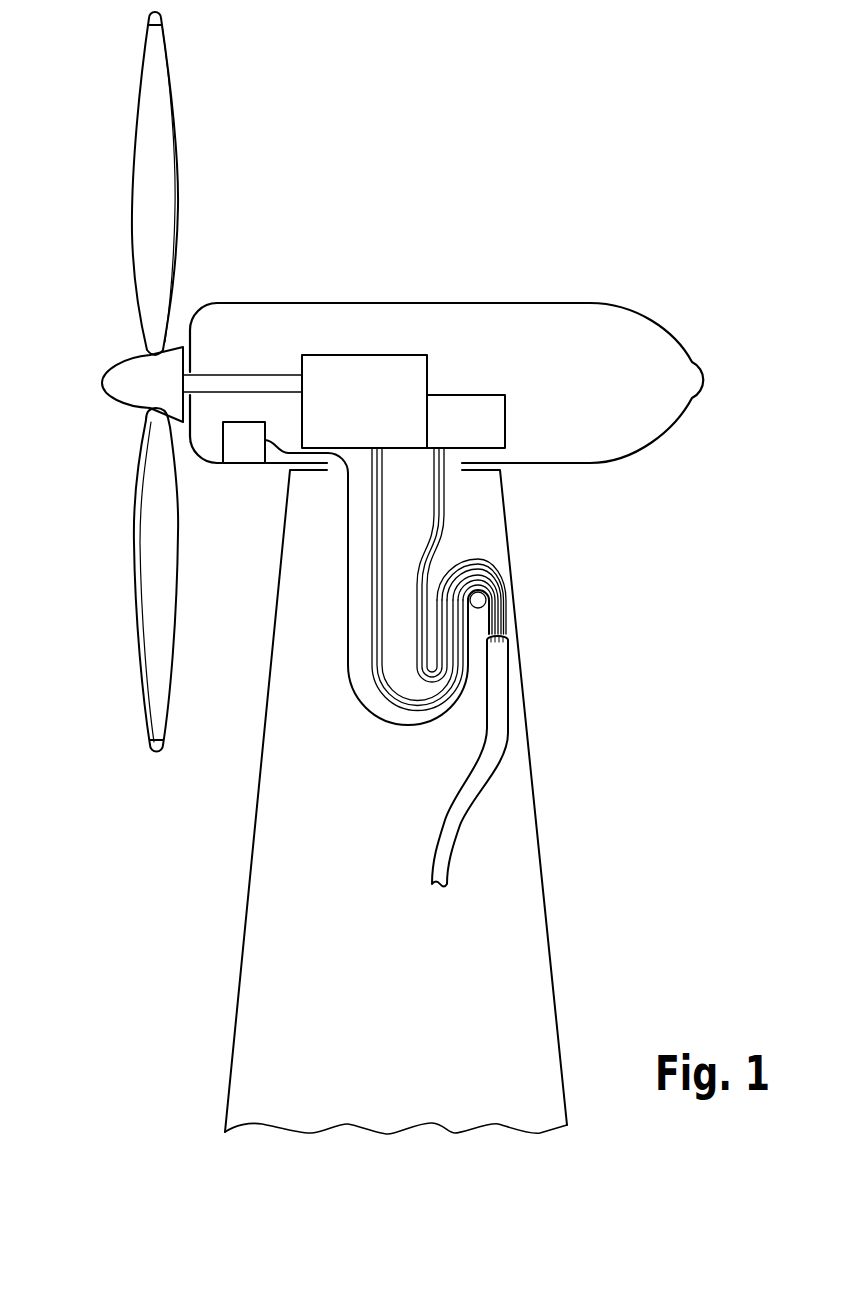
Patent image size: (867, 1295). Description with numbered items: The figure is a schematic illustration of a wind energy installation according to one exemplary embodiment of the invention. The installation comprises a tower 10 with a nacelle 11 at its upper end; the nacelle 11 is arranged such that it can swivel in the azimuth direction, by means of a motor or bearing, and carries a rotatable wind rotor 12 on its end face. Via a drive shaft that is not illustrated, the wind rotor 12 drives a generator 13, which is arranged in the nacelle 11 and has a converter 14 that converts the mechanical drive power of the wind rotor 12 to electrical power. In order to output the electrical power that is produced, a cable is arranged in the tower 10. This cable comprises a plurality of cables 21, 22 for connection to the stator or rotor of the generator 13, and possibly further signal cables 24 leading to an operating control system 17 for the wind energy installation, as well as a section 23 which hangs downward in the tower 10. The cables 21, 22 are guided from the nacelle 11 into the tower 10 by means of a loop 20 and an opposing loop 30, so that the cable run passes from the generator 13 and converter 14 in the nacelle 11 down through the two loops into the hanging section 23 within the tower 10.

The tower 10 is at (247, 993).
The nacelle 11 is at (453, 303).
The wind rotor 12 is at (127, 361).
The generator 13 is at (378, 362).
The converter 14 is at (467, 401).
The operating control system 17 is at (243, 456).
The loop 20 is at (403, 586).
The cable 21 is at (447, 512).
The cable 22 is at (372, 563).
The section 23 is at (443, 826).
The signal cable 24 is at (348, 523).
The opposing loop 30 is at (528, 557).